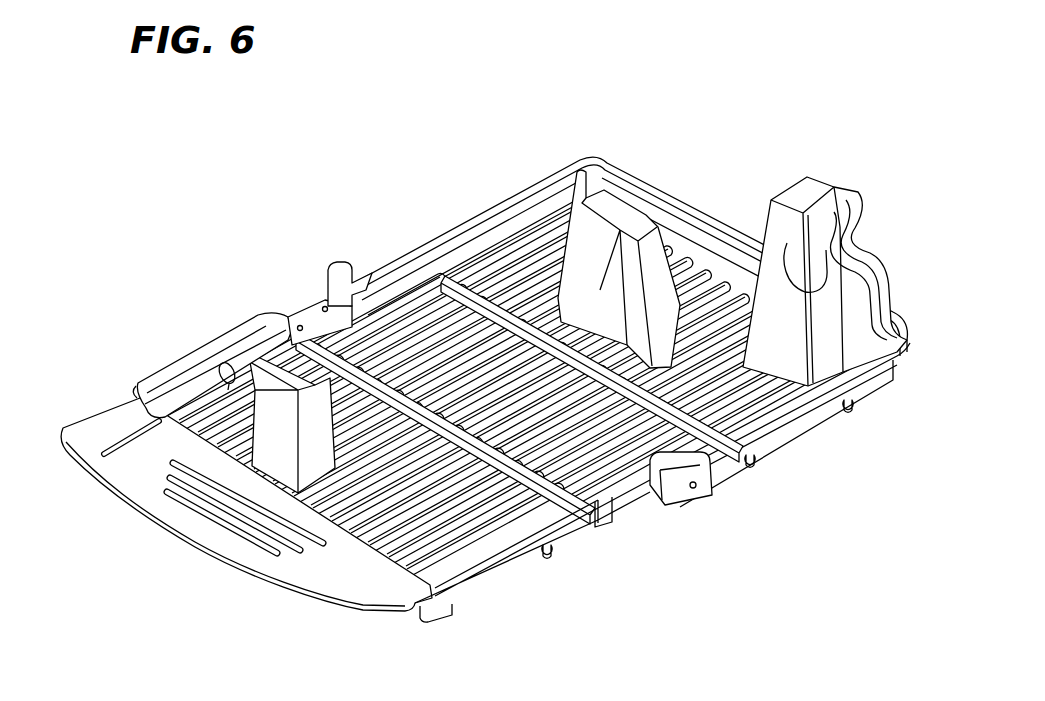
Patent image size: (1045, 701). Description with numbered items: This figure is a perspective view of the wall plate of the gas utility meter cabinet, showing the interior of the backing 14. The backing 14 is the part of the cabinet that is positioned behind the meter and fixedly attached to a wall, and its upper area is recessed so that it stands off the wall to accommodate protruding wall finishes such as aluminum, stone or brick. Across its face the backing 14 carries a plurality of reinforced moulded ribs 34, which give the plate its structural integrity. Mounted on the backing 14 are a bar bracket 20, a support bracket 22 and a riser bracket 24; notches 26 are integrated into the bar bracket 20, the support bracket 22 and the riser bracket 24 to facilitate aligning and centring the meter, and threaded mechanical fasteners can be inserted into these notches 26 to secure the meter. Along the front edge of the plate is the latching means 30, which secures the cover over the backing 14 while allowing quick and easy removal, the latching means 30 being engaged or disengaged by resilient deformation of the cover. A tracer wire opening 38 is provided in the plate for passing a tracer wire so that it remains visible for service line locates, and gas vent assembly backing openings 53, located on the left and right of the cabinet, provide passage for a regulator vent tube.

The backing 14 is at (183, 360).
The bar bracket 20 is at (255, 318).
The support bracket 22 is at (593, 253).
The riser bracket 24 is at (779, 248).
The notches 26 is at (337, 450).
The latching means 30 is at (848, 410).
The reinforced moulded ribs 34 is at (457, 313).
The tracer wire opening 38 is at (700, 487).
The gas vent assembly backing openings 53 is at (547, 550).